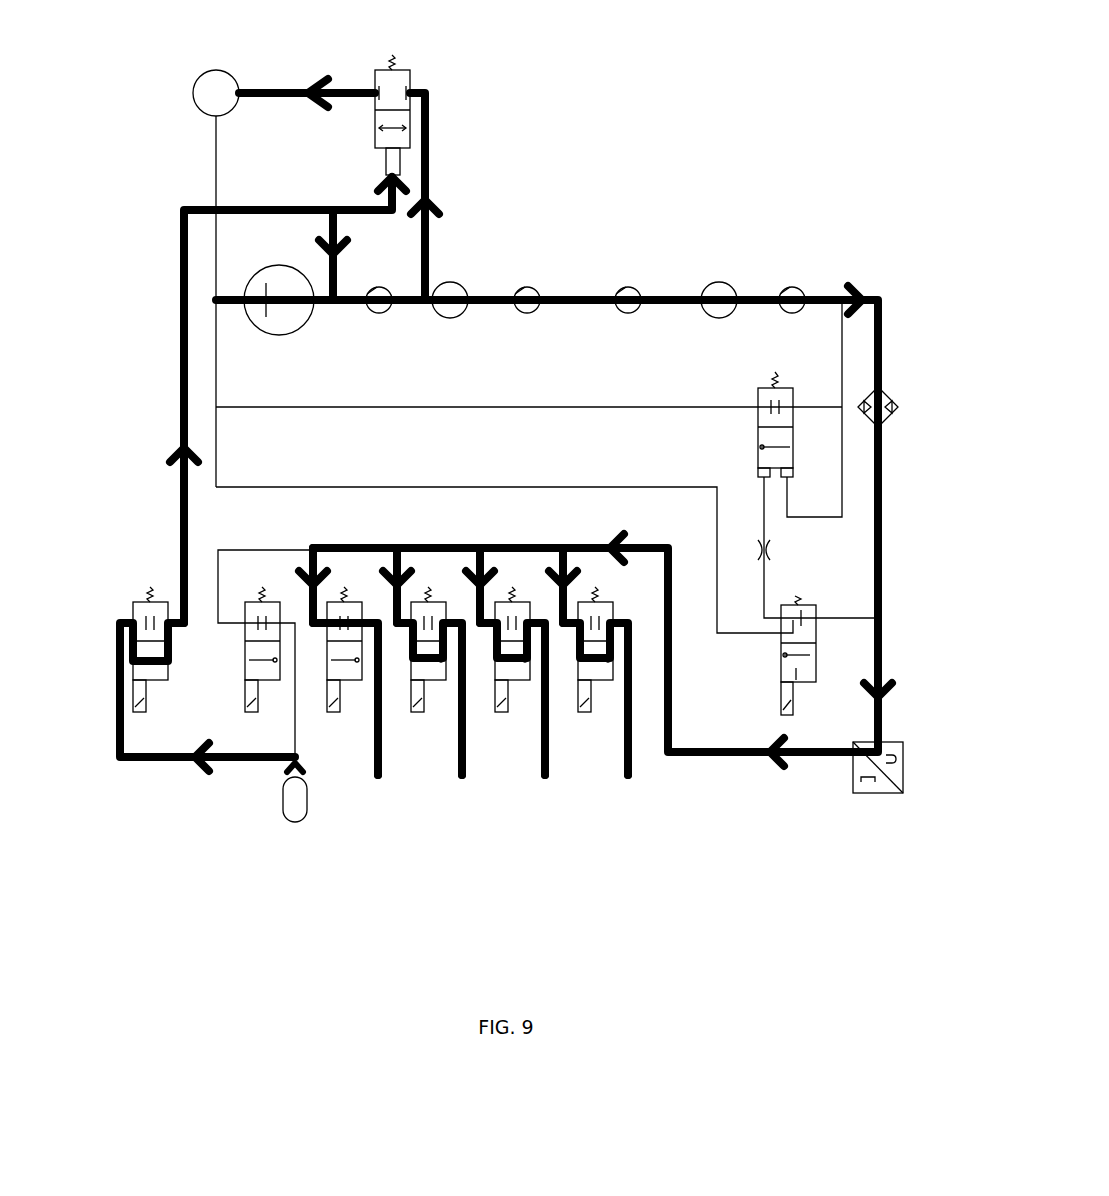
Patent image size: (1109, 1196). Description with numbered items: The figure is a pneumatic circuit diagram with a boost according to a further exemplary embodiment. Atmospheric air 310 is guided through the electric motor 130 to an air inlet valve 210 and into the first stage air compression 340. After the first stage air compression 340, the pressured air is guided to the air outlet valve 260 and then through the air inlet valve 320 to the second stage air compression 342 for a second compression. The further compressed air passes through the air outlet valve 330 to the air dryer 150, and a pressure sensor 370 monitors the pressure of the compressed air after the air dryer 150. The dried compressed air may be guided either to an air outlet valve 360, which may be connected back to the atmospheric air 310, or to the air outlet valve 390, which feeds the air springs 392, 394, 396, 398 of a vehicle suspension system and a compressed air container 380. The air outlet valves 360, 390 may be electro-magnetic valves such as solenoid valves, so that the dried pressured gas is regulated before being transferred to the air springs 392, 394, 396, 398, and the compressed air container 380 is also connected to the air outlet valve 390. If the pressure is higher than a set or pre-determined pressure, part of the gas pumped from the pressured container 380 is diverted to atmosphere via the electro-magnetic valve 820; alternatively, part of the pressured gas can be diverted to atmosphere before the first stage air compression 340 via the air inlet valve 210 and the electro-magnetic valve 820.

The atmospheric air 310 is at (192, 78).
The electro-magnetic valve 820 is at (416, 70).
The electric motor 130 is at (279, 338).
The air inlet valve 210 is at (379, 313).
The first stage air compression 340 is at (450, 318).
The air outlet valve 260 is at (527, 313).
The air inlet valve 320 is at (628, 313).
The second stage air compression 342 is at (719, 318).
The air outlet valve 330 is at (792, 287).
The air dryer 150 is at (905, 407).
The air outlet valve 360 is at (816, 646).
The pressure sensor 370 is at (908, 766).
The compressed air container 380 is at (295, 825).
The air outlet valve 390 is at (130, 607).
The air spring 392 is at (378, 785).
The air spring 394 is at (462, 785).
The air spring 396 is at (545, 785).
The air spring 398 is at (628, 785).